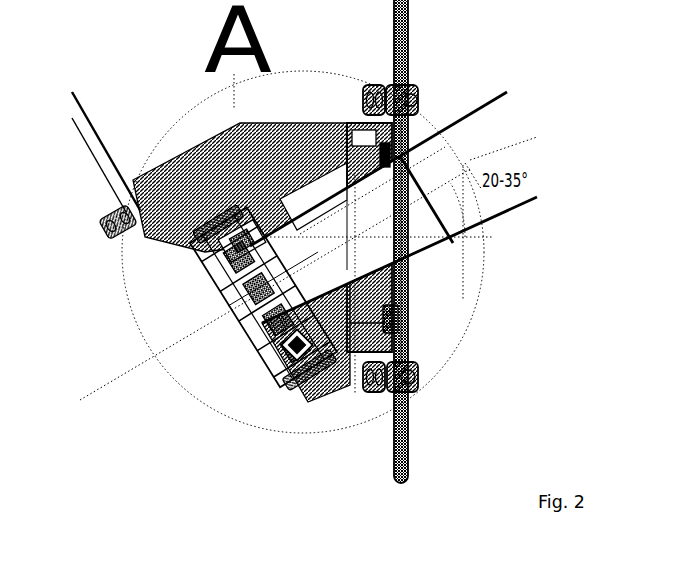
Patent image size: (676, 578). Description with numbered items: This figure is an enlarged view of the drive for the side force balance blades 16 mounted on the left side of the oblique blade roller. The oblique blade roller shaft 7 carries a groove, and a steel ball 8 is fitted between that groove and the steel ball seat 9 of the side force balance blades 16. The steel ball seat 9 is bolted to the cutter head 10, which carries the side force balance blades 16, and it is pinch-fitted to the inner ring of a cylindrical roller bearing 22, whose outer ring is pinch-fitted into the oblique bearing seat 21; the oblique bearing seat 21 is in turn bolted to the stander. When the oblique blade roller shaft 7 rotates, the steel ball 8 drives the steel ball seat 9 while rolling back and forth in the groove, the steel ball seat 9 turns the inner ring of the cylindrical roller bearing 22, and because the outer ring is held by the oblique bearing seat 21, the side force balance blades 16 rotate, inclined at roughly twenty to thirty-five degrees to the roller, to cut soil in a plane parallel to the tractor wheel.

The oblique blade roller shaft 7 is at (455, 237).
The steel ball 8 is at (385, 243).
The steel ball seat 9 is at (394, 300).
The cutter head 10 is at (418, 374).
The side force balance blades 16 is at (432, 418).
The oblique bearing seat 21 is at (314, 400).
The cylindrical roller bearing 22 is at (353, 395).